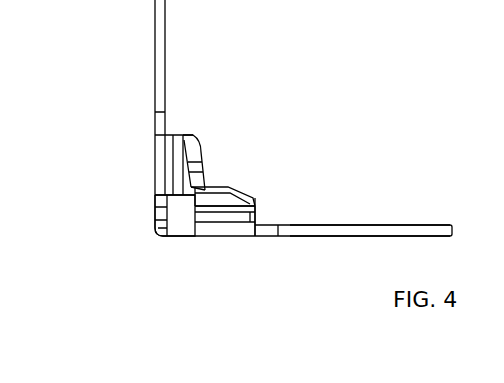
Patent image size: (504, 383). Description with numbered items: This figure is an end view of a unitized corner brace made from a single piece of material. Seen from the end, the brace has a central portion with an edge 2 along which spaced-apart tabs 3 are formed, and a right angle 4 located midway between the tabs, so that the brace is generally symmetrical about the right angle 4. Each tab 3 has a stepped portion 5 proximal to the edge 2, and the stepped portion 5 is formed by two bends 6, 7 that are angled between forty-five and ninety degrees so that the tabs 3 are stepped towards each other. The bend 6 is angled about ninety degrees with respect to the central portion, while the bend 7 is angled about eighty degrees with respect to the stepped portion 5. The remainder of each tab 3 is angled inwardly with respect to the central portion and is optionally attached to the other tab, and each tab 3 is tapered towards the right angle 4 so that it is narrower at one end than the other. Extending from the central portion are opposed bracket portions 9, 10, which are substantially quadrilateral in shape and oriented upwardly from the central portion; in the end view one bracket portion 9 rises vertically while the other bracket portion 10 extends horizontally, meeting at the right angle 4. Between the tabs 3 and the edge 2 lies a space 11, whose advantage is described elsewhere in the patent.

The edge 2 is at (278, 225).
The tab 3 is at (202, 150).
The right angle 4 is at (158, 224).
The stepped portion 5 is at (173, 135).
The bend 6 is at (168, 135).
The bend 7 is at (182, 135).
The bracket portion 9 is at (166, 33).
The bracket portion 10 is at (404, 230).
The space 11 is at (185, 213).